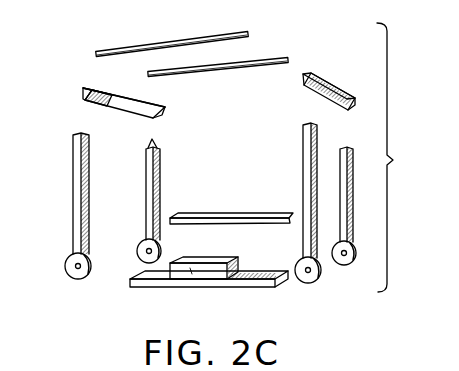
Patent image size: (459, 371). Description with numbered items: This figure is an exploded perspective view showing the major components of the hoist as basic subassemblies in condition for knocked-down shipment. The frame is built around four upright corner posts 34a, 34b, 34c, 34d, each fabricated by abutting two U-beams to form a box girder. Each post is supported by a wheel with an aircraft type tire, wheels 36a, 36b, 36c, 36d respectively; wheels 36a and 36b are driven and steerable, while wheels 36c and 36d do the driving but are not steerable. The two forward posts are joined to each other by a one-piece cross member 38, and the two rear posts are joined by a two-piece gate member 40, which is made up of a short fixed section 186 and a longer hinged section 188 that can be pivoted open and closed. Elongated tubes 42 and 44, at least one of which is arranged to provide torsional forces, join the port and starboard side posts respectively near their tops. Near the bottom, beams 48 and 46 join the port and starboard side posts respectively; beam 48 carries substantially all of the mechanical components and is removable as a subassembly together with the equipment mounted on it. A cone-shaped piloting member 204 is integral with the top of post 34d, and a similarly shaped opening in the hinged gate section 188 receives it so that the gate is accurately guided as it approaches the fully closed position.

The corner post 34a is at (303, 157).
The corner post 34b is at (352, 160).
The corner post 34c is at (76, 167).
The corner post 34d is at (157, 172).
The wheel 36a is at (307, 282).
The wheel 36b is at (343, 265).
The wheel 36c is at (65, 270).
The wheel 36d is at (137, 250).
The cross member 38 is at (338, 88).
The gate member 40 is at (113, 92).
The elongated tube 42 is at (248, 62).
The elongated tube 44 is at (161, 30).
The beam 46 is at (202, 213).
The beam 48 is at (264, 273).
The fixed section 186 is at (83, 100).
The hinged section 188 is at (115, 92).
The piloting member 204 is at (156, 146).